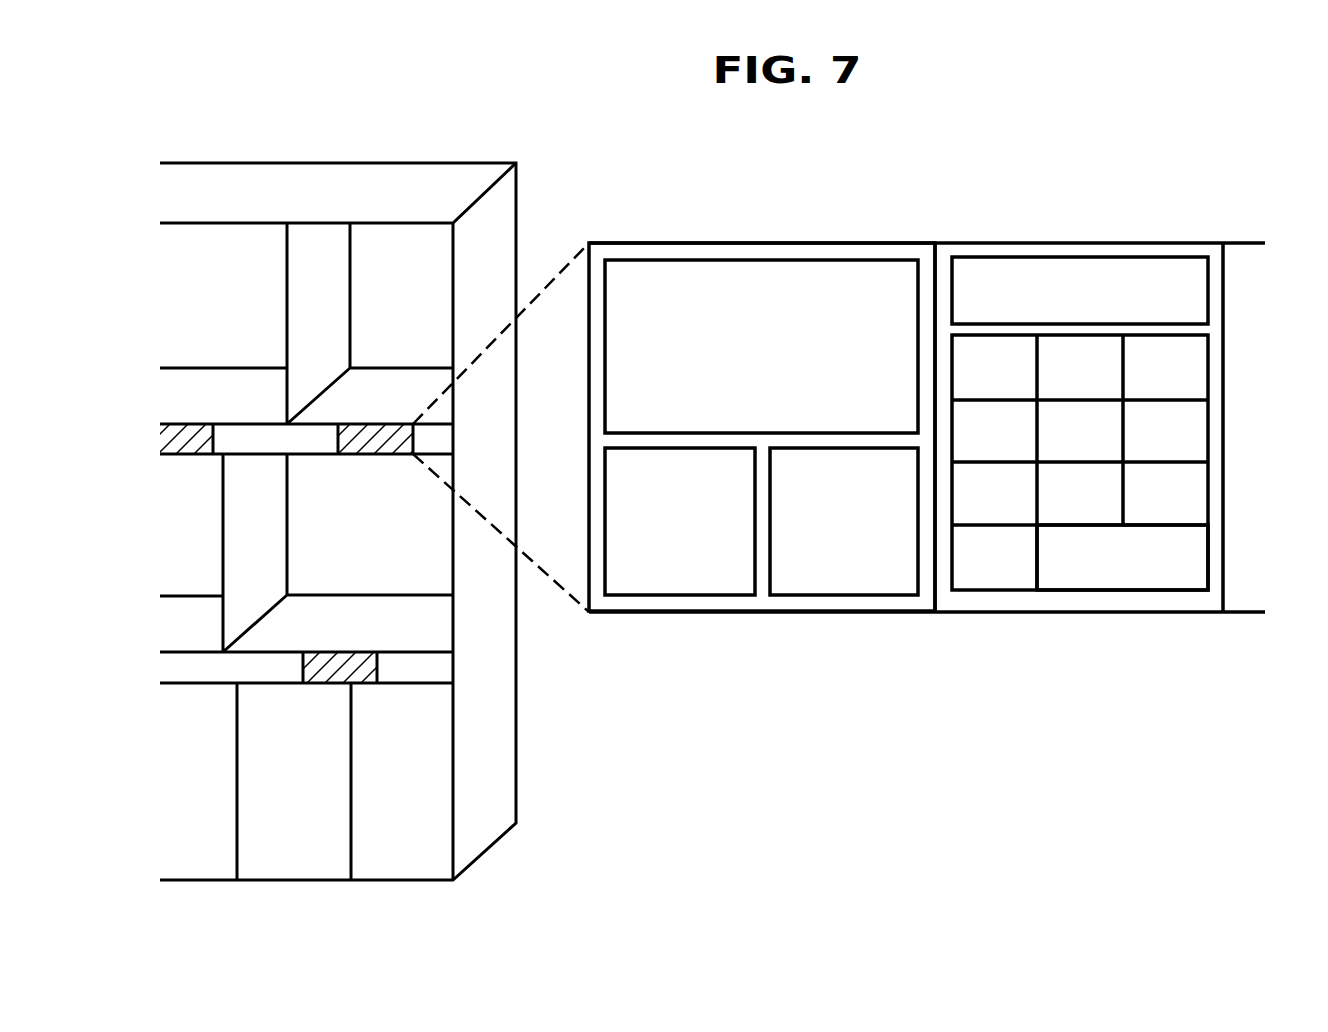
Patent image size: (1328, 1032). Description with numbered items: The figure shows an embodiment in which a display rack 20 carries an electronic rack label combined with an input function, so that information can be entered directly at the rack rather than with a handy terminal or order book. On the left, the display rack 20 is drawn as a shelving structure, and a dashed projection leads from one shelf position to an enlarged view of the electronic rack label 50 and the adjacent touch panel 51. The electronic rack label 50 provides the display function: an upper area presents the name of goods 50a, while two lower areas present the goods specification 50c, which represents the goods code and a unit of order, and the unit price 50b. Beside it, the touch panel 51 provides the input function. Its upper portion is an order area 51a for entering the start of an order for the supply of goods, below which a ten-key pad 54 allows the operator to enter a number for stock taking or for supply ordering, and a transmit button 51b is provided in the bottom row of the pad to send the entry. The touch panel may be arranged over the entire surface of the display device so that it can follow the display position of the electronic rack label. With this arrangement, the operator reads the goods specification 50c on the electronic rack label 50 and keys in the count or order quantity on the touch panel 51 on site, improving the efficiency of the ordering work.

The display rack 20 is at (516, 211).
The electronic rack label 50 is at (697, 243).
The name of goods 50a is at (782, 273).
The unit price 50b is at (848, 585).
The goods specification 50c is at (675, 585).
The touch panel 51 is at (1020, 243).
The order area 51a is at (1208, 291).
The transmit button 51b is at (1208, 556).
The ten-key pad 54 is at (1208, 427).